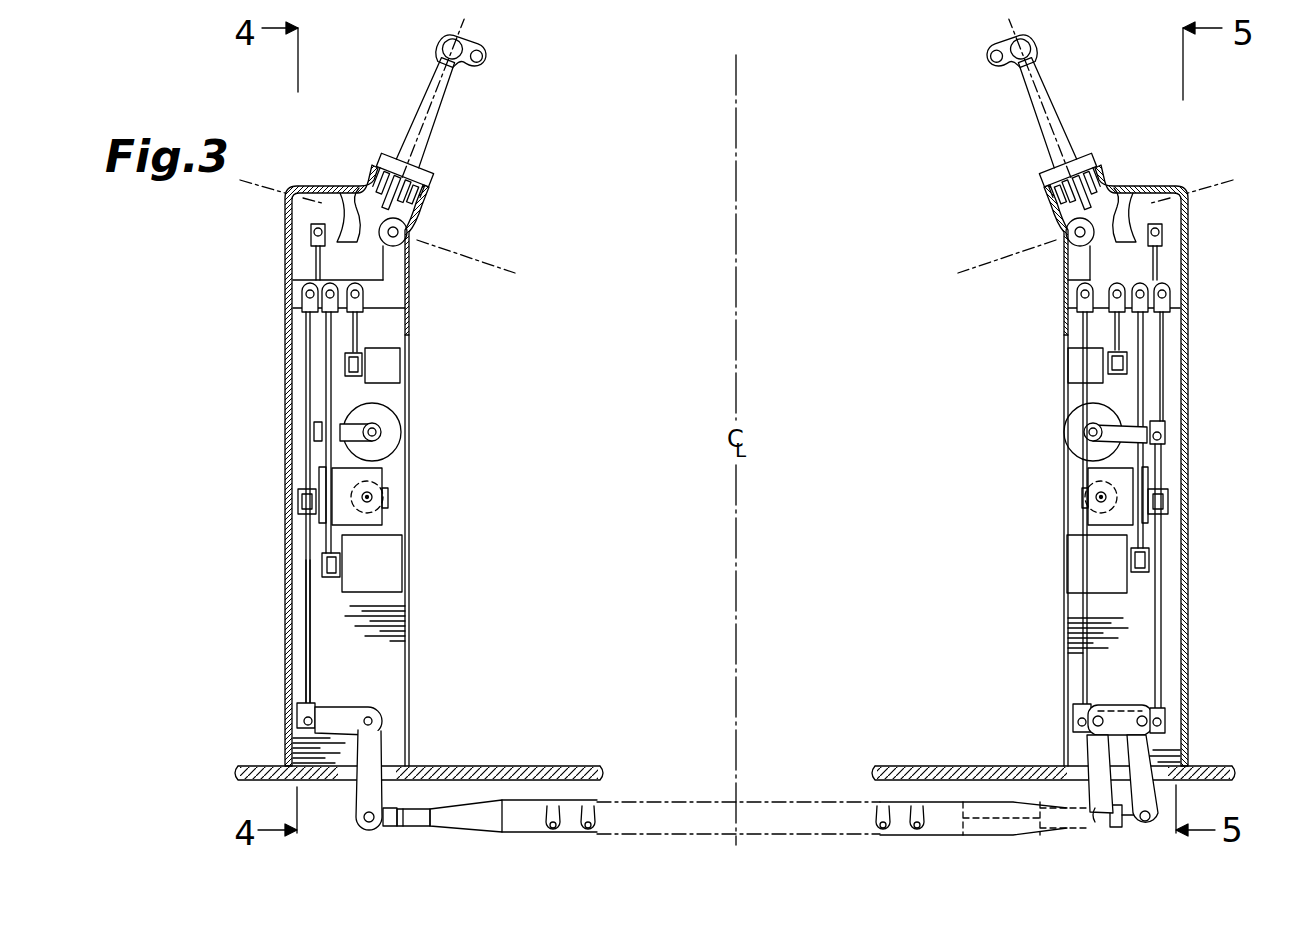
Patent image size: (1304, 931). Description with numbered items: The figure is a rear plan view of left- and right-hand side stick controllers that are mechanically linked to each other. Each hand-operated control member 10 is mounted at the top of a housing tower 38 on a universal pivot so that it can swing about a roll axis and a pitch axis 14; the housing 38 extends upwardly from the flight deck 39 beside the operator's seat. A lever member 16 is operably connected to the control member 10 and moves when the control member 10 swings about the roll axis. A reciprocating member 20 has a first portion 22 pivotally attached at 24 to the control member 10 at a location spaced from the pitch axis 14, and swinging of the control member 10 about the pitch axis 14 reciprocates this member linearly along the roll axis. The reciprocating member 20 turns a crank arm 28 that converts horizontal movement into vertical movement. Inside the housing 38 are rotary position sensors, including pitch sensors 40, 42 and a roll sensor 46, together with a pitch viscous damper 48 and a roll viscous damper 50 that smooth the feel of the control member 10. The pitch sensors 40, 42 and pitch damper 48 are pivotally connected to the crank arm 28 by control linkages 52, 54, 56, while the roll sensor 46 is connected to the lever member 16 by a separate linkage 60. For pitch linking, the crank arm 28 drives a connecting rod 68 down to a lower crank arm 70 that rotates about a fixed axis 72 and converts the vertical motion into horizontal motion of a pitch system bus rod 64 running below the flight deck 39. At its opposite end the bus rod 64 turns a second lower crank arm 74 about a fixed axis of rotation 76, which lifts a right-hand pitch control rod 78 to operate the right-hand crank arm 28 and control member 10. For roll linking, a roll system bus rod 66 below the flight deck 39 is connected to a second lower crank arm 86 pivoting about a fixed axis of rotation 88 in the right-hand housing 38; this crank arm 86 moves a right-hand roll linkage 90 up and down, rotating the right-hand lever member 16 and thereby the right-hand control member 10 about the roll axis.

The hand-operated control member 10 is at (430, 140).
The pitch axis 14 is at (513, 273).
The lever member 16 is at (333, 212).
The reciprocating member 20 is at (412, 250).
The first portion 22 is at (427, 213).
The pivotal attachment 24 is at (432, 198).
The crank arm 28 is at (390, 298).
The housing tower 38 is at (285, 527).
The flight deck 39 is at (492, 772).
The pitch sensor 40 is at (382, 472).
The pitch sensor 42 is at (388, 562).
The roll sensor 46 is at (395, 430).
The pitch viscous damper 48 is at (390, 367).
The roll viscous damper 50 is at (380, 497).
The control linkage 52 is at (306, 337).
The control linkage 54 is at (328, 378).
The control linkage 56 is at (357, 332).
The linkage 60 is at (313, 257).
The pitch system bus rod 64 is at (525, 812).
The roll system bus rod 66 is at (573, 807).
The connecting rod 68 is at (308, 582).
The lower crank arm 70 is at (372, 745).
The fixed axis 72 is at (383, 718).
The second lower crank arm 74 is at (1147, 747).
The fixed axis of rotation 76 is at (1150, 708).
The right-hand pitch control rod 78 is at (1080, 640).
The second lower crank arm 86 is at (1093, 748).
The fixed axis of rotation 88 is at (1097, 717).
The right-hand roll linkage 90 is at (1157, 583).